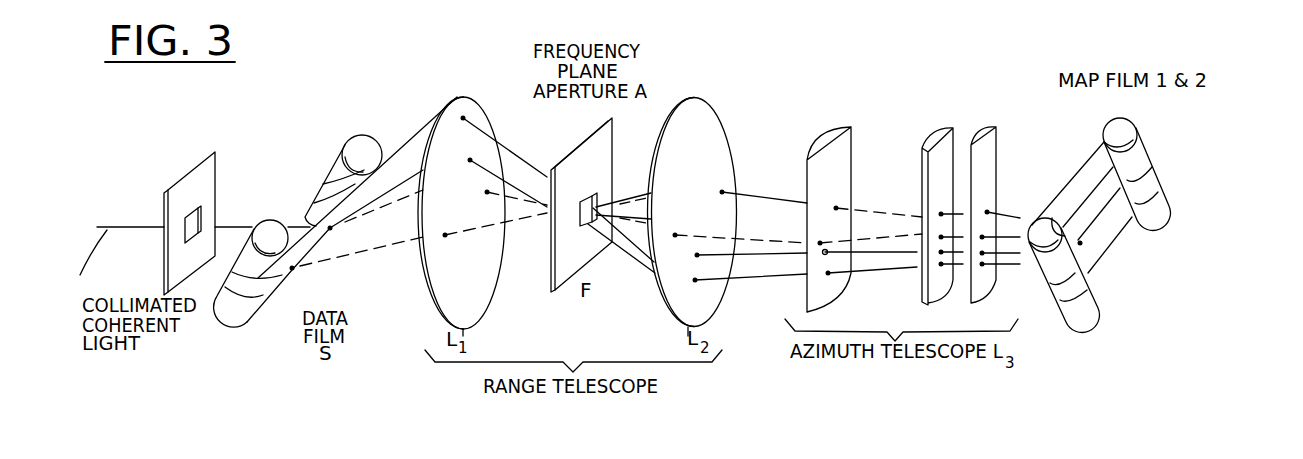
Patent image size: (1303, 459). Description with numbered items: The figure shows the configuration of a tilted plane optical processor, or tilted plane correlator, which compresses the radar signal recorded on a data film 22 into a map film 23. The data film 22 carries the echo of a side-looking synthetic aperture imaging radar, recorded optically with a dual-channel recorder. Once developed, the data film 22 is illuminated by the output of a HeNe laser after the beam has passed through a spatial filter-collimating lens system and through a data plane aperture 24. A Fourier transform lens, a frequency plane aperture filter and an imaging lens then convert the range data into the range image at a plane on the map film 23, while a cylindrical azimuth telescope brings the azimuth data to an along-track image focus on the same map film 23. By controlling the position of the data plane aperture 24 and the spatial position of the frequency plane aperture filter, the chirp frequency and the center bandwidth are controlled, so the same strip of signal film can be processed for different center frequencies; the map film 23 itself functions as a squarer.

The data film 22 is at (232, 322).
The map film 23 is at (1083, 323).
The data plane aperture 24 is at (216, 200).